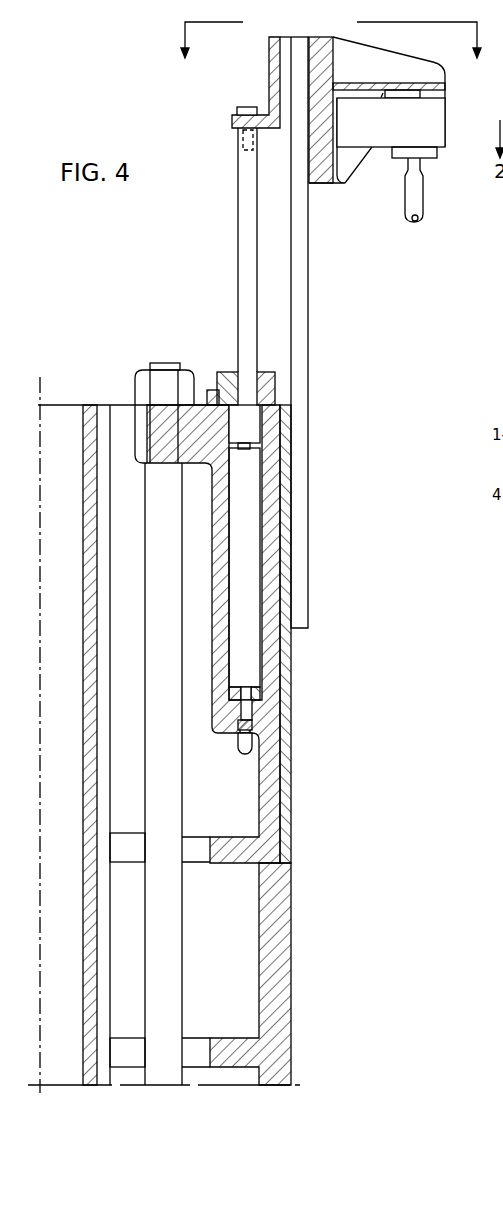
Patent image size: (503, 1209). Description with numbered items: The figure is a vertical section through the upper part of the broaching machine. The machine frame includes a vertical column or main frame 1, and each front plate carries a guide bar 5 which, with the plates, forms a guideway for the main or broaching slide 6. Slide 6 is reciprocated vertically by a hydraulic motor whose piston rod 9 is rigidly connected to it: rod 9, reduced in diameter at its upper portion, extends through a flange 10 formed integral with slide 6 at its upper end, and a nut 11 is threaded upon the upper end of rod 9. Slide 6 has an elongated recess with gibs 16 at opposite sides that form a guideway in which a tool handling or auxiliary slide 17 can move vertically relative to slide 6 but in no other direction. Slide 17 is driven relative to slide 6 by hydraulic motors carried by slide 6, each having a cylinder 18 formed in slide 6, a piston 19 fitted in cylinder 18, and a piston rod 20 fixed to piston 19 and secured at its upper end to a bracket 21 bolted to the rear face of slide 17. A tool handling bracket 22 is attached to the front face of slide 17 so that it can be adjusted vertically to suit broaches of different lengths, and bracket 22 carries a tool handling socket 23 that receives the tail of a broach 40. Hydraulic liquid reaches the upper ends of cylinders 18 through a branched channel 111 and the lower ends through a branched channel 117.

The main frame 1 is at (59, 423).
The guide bar 5 is at (330, 56).
The main slide 6 is at (283, 968).
The piston rod 9 is at (170, 967).
The flange 10 is at (143, 465).
The nut 11 is at (142, 390).
The gib 16 is at (285, 709).
The auxiliary slide 17 is at (308, 266).
The cylinder 18 is at (252, 575).
The piston 19 is at (255, 433).
The piston rod 20 is at (238, 236).
The bracket 21 is at (233, 122).
The tool handling bracket 22 is at (378, 56).
The tool handling socket 23 is at (425, 128).
The broach 40 is at (415, 201).
The branched channel 111 is at (215, 395).
The branched channel 117 is at (243, 753).